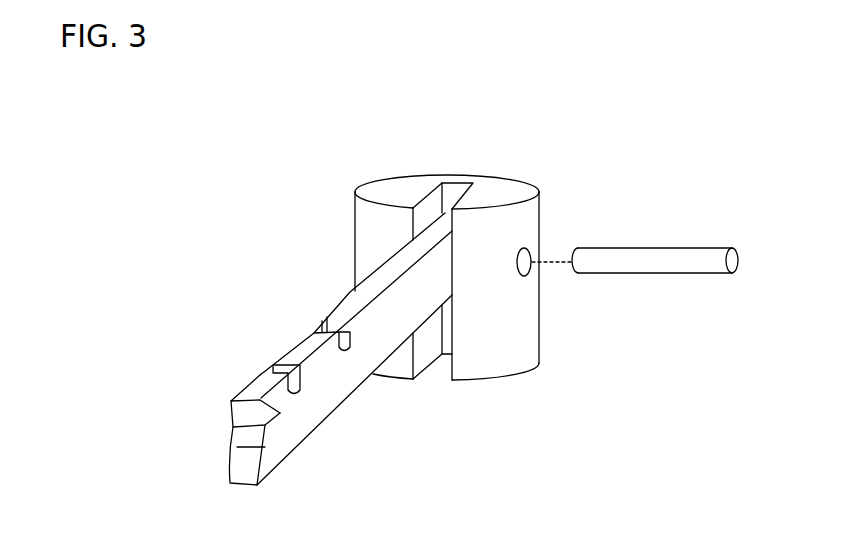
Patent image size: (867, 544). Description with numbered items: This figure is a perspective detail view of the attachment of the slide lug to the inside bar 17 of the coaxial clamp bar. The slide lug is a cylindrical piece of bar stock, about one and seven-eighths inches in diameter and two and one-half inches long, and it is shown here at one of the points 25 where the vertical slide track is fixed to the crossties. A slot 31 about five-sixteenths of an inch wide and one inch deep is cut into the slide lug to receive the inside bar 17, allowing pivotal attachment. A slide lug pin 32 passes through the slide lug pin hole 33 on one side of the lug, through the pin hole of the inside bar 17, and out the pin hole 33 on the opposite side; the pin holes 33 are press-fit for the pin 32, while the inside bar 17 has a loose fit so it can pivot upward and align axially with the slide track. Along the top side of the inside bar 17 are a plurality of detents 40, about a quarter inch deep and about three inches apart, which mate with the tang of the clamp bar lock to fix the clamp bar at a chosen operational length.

The inside bar 17 is at (330, 383).
The points 25 is at (498, 195).
The slot 31 is at (430, 212).
The slide lug pin 32 is at (607, 263).
The slide lug pin hole 33 is at (527, 268).
The detents 40 is at (323, 320).